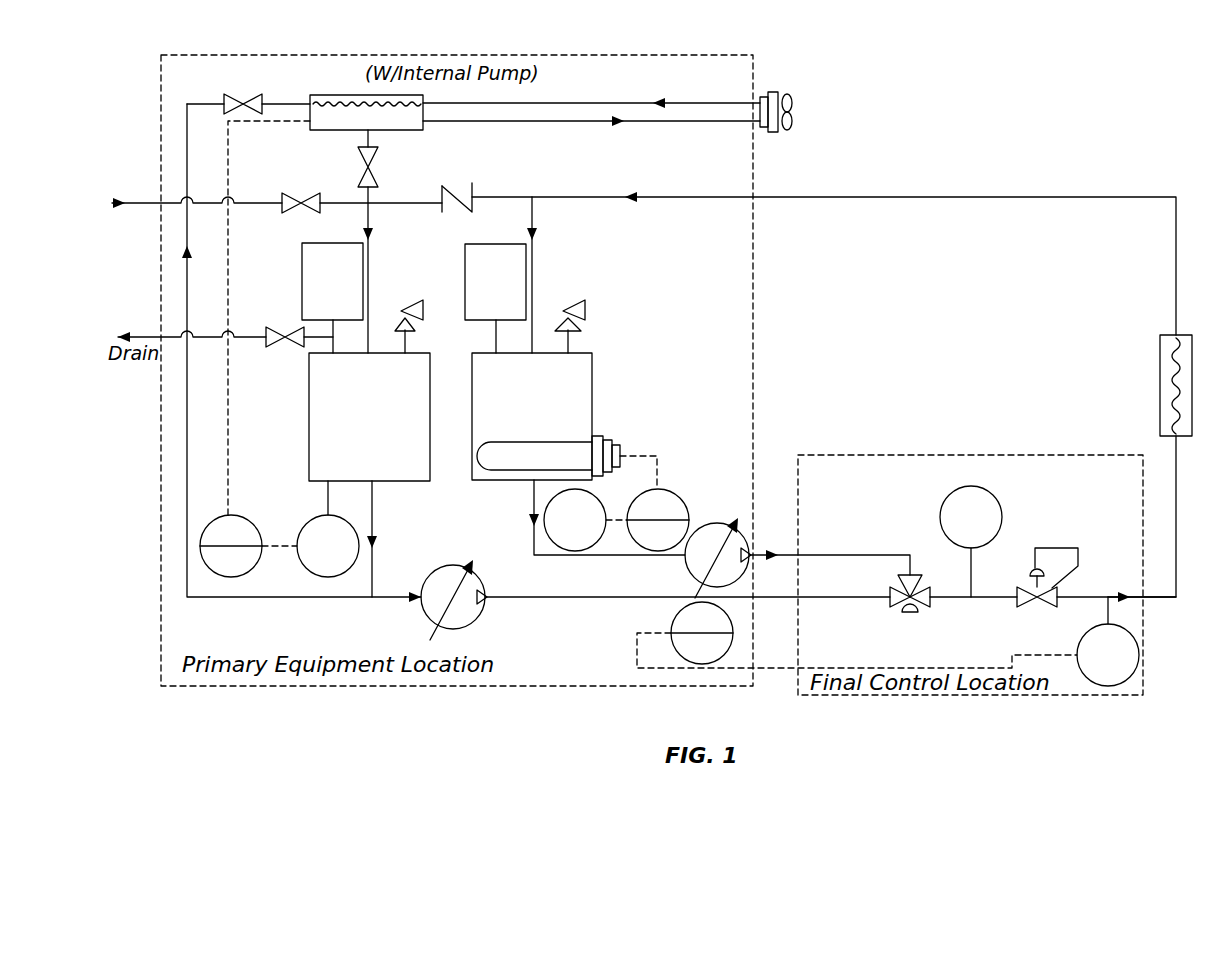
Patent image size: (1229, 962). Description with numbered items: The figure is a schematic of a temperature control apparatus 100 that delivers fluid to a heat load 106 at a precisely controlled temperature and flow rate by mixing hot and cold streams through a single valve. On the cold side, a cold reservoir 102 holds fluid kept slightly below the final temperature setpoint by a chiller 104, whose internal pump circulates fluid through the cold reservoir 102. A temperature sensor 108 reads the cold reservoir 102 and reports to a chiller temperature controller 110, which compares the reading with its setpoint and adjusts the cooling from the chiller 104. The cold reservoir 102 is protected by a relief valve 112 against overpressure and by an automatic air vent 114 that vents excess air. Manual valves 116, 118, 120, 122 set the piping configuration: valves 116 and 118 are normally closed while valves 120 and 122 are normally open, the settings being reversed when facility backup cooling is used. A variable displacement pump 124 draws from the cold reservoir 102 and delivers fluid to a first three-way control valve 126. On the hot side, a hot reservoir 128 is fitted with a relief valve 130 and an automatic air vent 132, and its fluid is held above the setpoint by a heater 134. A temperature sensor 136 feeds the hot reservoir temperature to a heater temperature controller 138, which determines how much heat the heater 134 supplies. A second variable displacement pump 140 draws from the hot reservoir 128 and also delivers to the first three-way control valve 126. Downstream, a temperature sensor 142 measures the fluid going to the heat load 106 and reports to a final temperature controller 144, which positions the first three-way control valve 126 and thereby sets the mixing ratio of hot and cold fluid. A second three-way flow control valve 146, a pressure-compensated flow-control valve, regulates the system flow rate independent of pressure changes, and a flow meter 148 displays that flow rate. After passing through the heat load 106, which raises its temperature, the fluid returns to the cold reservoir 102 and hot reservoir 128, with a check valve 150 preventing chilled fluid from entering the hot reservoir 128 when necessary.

The temperature control apparatus 100 is at (898, 128).
The cold reservoir 102 is at (309, 418).
The chiller 104 is at (352, 95).
The heat load 106 is at (1167, 333).
The temperature sensor 108 is at (330, 577).
The chiller temperature controller 110 is at (233, 577).
The relief valve 112 is at (410, 334).
The automatic air vent 114 is at (302, 280).
The manual valve 116 is at (292, 211).
The manual valve 118 is at (290, 346).
The manual valve 120 is at (226, 100).
The manual valve 122 is at (378, 166).
The variable displacement pump 124 is at (464, 565).
The first three-way control valve 126 is at (898, 606).
The hot reservoir 128 is at (503, 482).
The relief valve 130 is at (590, 311).
The automatic air vent 132 is at (528, 262).
The heater 134 is at (585, 440).
The temperature sensor 136 is at (546, 538).
The heater temperature controller 138 is at (656, 553).
The variable displacement pump 140 is at (719, 523).
The temperature sensor 142 is at (1105, 688).
The final temperature controller 144 is at (700, 665).
The second three-way flow control valve 146 is at (1031, 579).
The flow meter 148 is at (940, 520).
The check valve 150 is at (458, 185).